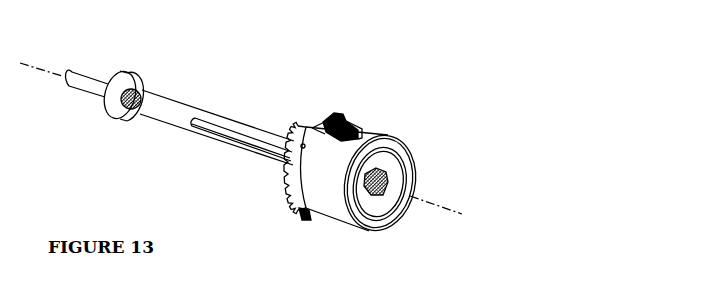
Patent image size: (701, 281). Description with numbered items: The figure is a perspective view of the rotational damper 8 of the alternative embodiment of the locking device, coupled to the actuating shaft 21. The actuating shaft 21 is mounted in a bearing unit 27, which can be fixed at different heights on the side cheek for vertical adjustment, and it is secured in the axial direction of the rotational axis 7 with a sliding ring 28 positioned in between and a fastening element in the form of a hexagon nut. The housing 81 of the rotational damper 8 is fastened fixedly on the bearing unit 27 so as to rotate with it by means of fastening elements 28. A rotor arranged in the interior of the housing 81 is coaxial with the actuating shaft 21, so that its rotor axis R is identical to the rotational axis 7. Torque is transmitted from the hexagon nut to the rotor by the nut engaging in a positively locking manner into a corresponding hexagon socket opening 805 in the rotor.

The rotational axis 7 is at (470, 213).
The rotor axis R is at (470, 213).
The actuating shaft 21 is at (166, 113).
The bearing unit 27 is at (303, 132).
The sliding ring 28 is at (343, 120).
The rotational damper 8 is at (408, 106).
The housing 81 is at (333, 200).
The hexagon socket opening 805 is at (386, 175).